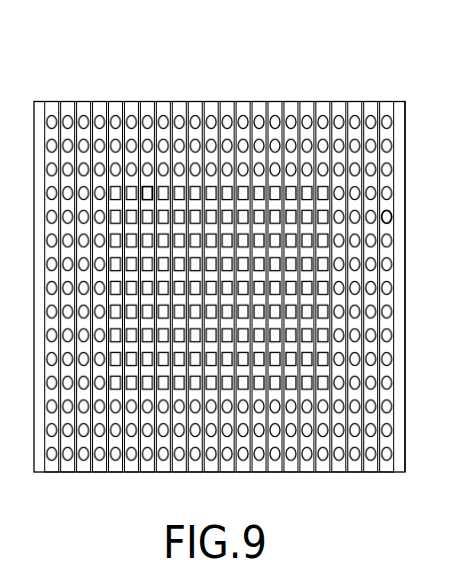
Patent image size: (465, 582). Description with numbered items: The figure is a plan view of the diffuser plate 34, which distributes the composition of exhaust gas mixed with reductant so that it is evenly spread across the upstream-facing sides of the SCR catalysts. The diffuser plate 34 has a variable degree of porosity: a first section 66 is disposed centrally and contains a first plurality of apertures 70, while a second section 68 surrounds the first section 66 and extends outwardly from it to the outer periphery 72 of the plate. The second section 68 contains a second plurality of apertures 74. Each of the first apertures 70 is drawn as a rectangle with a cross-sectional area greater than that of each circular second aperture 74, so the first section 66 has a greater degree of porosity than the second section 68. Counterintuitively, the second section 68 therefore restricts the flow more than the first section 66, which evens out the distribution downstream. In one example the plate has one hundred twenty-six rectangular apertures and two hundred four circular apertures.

The diffuser plate 34 is at (315, 62).
The first section 66 is at (195, 230).
The second section 68 is at (372, 277).
The first plurality of apertures 70 is at (148, 192).
The outer periphery 72 is at (405, 145).
The second plurality of apertures 74 is at (387, 217).